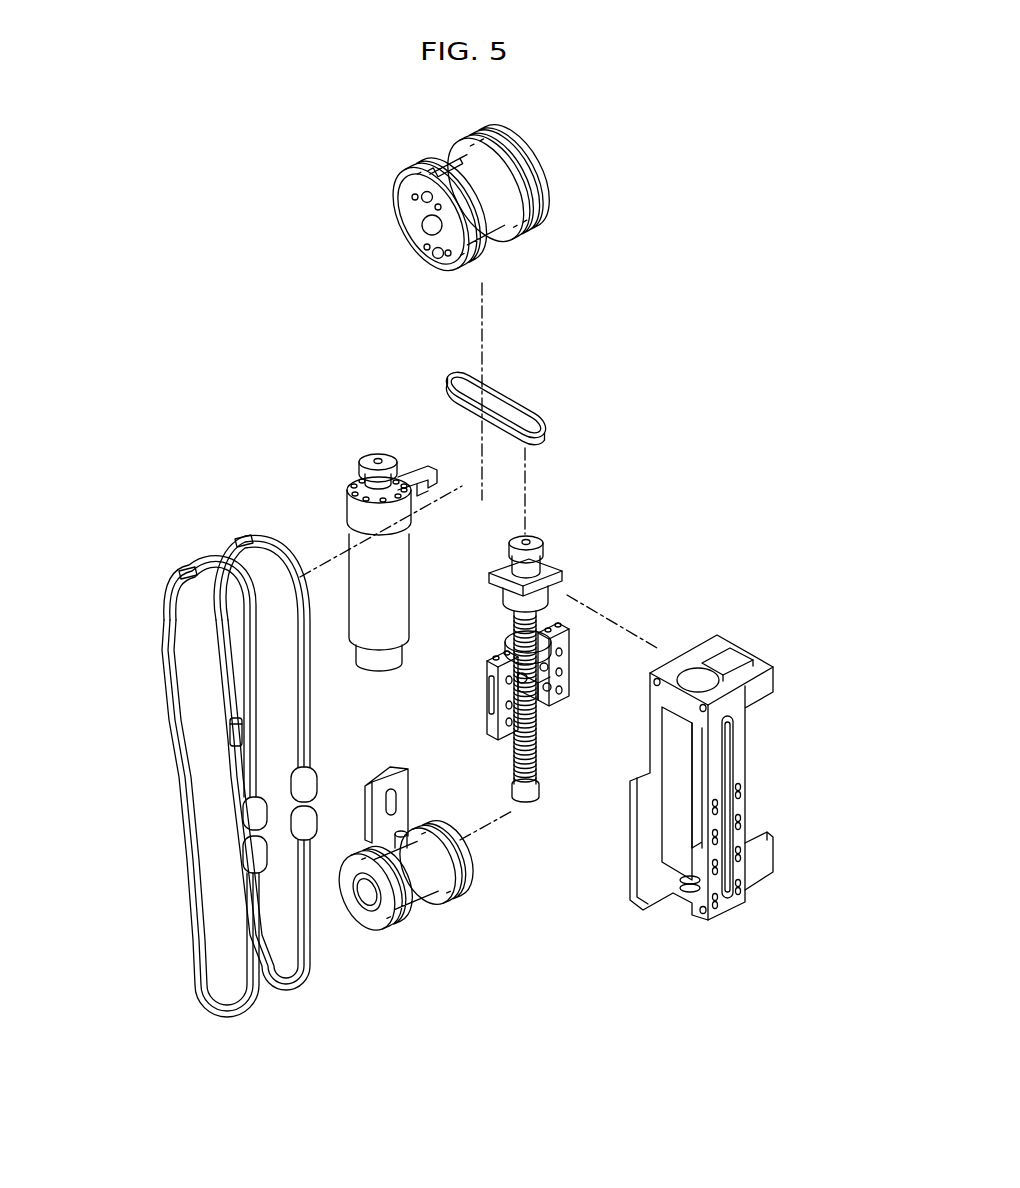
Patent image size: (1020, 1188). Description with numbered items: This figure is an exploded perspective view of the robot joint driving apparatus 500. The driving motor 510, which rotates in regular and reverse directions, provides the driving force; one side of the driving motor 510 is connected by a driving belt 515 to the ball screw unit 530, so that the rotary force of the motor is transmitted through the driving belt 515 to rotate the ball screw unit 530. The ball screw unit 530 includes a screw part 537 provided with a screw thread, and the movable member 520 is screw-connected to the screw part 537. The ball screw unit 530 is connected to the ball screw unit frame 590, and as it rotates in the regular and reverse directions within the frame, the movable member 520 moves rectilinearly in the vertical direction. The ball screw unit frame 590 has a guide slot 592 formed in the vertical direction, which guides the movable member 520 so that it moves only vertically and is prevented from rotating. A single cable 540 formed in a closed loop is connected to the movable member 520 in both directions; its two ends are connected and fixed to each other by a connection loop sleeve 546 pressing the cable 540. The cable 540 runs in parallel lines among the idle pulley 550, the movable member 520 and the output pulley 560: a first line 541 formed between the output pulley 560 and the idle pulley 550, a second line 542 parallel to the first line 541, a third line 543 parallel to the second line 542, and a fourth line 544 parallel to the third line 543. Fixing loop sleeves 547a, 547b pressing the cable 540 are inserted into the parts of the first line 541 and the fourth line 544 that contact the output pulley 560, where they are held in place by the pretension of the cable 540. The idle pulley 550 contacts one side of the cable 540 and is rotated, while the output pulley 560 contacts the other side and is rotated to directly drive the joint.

The robot joint driving apparatus 500 is at (284, 175).
The driving motor 510 is at (358, 510).
The driving belt 515 is at (501, 394).
The movable member 520 is at (470, 698).
The ball screw unit 530 is at (558, 542).
The screw part 537 is at (537, 757).
The cable 540 is at (150, 777).
The first line 541 is at (247, 784).
The second line 542 is at (260, 752).
The third line 543 is at (297, 682).
The fourth line 544 is at (308, 689).
The connection loop sleeve 546 is at (230, 732).
The fixing loop sleeve 547a is at (186, 572).
The fixing loop sleeve 547b is at (243, 536).
The idle pulley 550 is at (471, 895).
The output pulley 560 is at (575, 183).
The ball screw unit frame 590 is at (762, 733).
The guide slot 592 is at (739, 763).